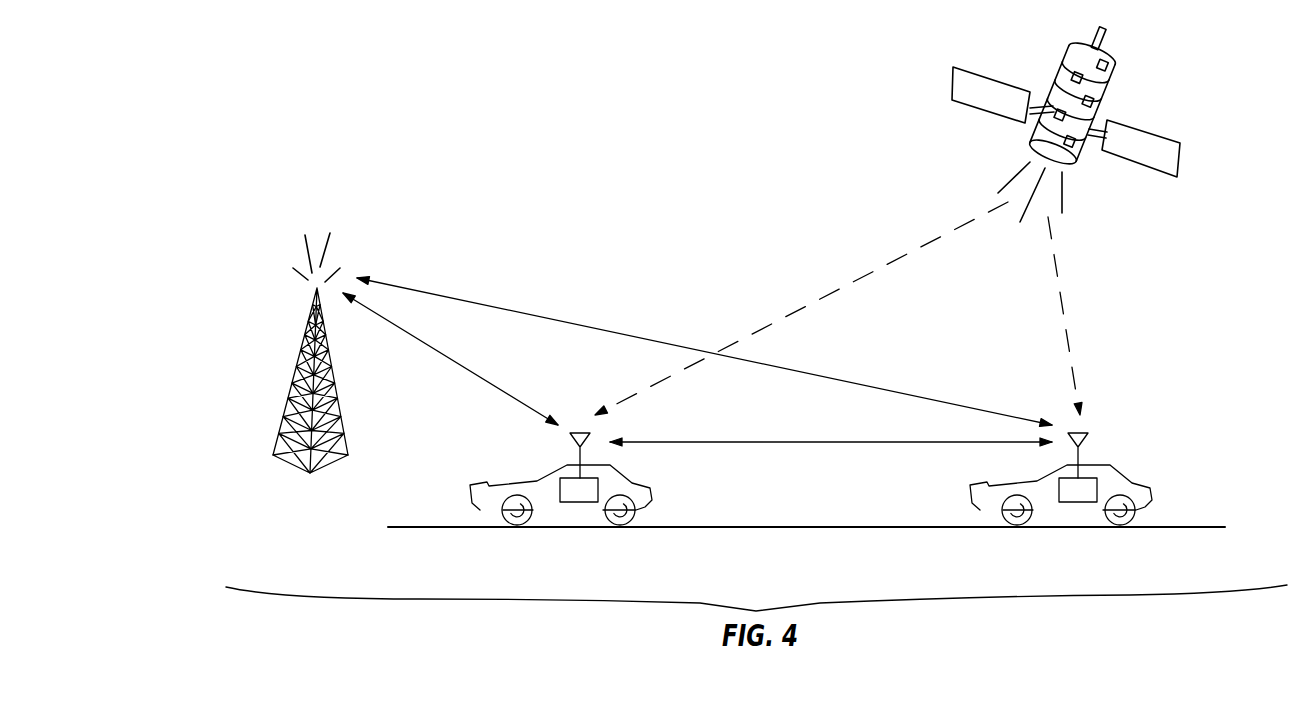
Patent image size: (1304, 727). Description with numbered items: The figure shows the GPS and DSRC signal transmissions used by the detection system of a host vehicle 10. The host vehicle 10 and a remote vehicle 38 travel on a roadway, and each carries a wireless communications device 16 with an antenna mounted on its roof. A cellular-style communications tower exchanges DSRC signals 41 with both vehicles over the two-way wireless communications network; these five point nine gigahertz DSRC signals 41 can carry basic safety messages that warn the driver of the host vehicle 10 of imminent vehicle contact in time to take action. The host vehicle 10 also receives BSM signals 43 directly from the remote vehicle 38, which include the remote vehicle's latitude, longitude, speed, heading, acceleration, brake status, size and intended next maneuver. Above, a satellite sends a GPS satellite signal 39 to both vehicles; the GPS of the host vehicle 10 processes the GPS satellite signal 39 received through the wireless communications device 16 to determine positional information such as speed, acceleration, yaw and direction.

The host vehicle 10 is at (645, 483).
The wireless communications device 16 is at (578, 502).
The remote vehicle 38 is at (1145, 483).
The GPS satellite signal 39 is at (902, 255).
The DSRC signals 41 is at (532, 315).
The BSM signals 43 is at (783, 442).